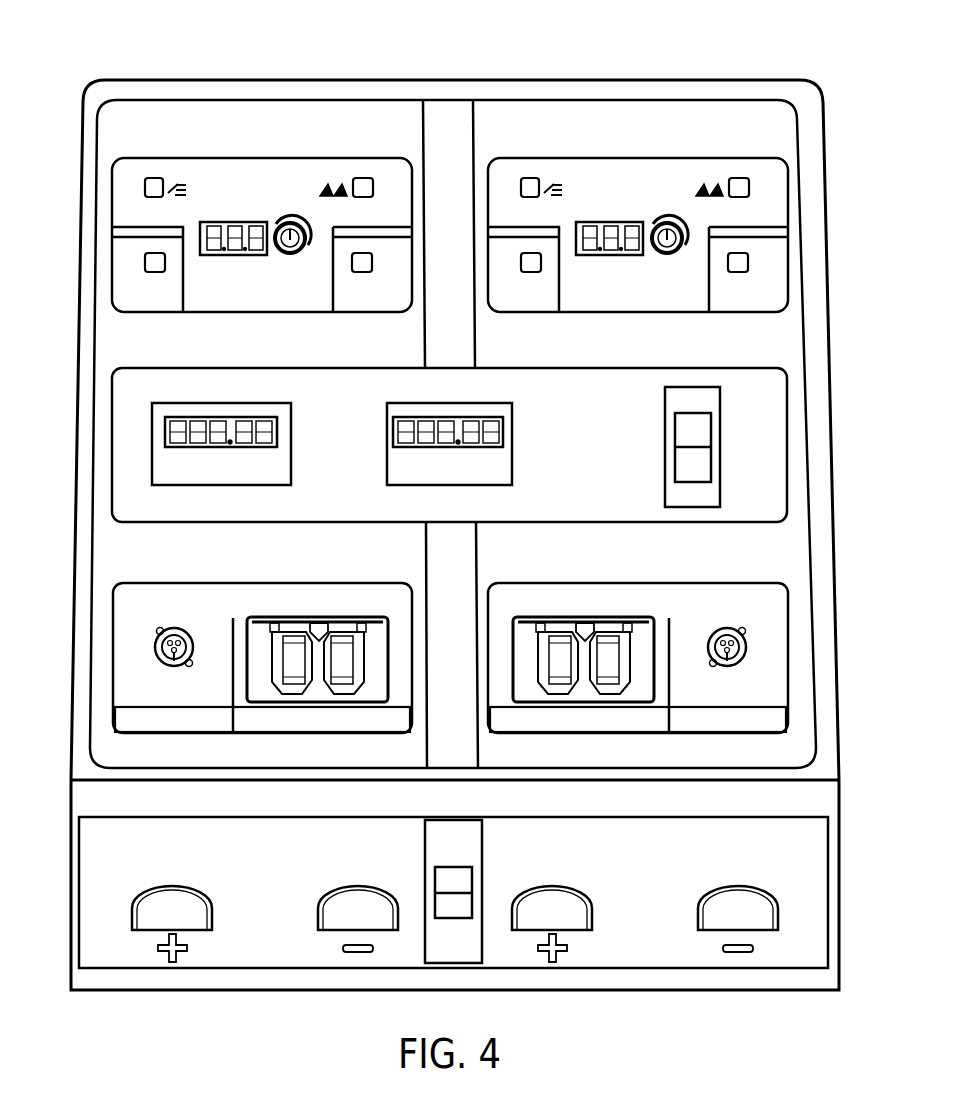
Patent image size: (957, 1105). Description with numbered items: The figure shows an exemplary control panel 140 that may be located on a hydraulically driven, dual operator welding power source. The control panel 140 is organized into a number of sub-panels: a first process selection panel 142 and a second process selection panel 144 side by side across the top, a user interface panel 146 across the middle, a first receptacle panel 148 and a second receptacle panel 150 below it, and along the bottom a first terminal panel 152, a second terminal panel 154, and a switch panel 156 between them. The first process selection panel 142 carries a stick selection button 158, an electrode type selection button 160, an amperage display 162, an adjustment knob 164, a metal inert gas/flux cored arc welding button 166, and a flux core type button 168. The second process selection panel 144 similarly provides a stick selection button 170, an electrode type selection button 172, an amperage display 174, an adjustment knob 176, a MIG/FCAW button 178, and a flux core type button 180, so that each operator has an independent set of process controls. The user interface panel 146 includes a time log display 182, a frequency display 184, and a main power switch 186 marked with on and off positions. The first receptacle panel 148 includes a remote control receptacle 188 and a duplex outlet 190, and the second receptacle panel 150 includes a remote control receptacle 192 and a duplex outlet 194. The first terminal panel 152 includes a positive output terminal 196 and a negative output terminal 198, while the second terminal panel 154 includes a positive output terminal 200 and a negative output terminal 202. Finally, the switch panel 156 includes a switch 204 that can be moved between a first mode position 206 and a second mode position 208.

The control panel 140 is at (453, 44).
The first process selection panel 142 is at (294, 188).
The second process selection panel 144 is at (607, 185).
The user interface panel 146 is at (546, 386).
The first receptacle panel 148 is at (252, 604).
The second receptacle panel 150 is at (646, 604).
The first terminal panel 152 is at (256, 836).
The second terminal panel 154 is at (666, 836).
The switch panel 156 is at (461, 816).
The stick selection button 158 is at (157, 178).
The electrode type selection button 160 is at (145, 265).
The amperage display 162 is at (229, 219).
The adjustment knob 164 is at (291, 254).
The MIG/FCAW button 166 is at (364, 178).
The flux core type button 168 is at (372, 265).
The stick selection button 170 is at (533, 178).
The electrode type selection button 172 is at (521, 265).
The amperage display 174 is at (609, 221).
The adjustment knob 176 is at (668, 254).
The MIG/FCAW button 178 is at (740, 178).
The flux core type button 180 is at (748, 265).
The time log display 182 is at (221, 399).
The frequency display 184 is at (447, 399).
The main power switch 186 is at (696, 385).
The remote control receptacle 188 is at (168, 622).
The duplex outlet 190 is at (312, 618).
The remote control receptacle 192 is at (735, 622).
The duplex outlet 194 is at (589, 618).
The positive output terminal 196 is at (169, 885).
The negative output terminal 198 is at (355, 885).
The positive output terminal 200 is at (554, 884).
The negative output terminal 202 is at (743, 884).
The switch 204 is at (483, 888).
The first mode position 206 is at (436, 838).
The second mode position 208 is at (479, 951).